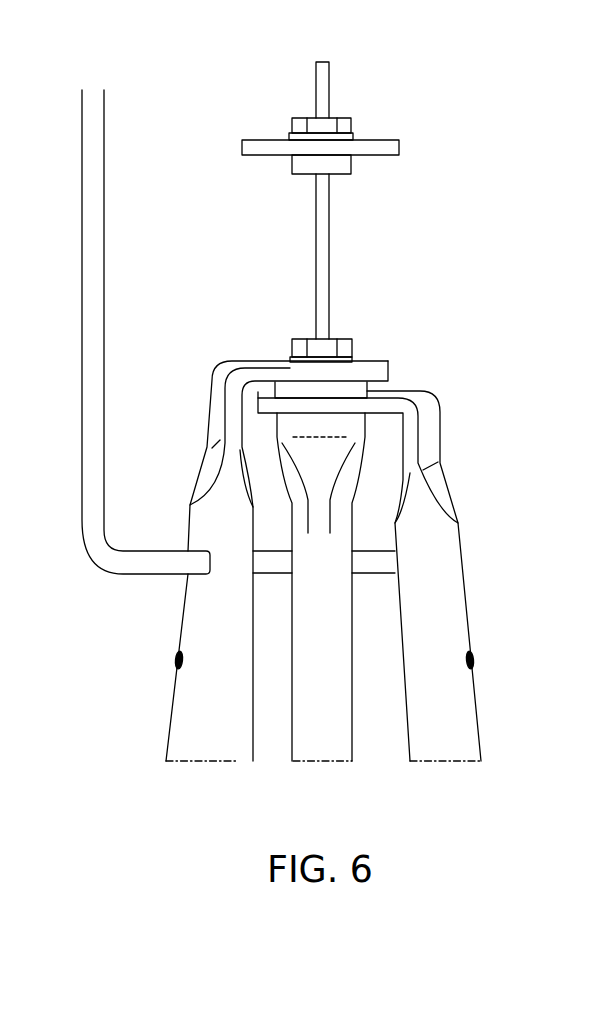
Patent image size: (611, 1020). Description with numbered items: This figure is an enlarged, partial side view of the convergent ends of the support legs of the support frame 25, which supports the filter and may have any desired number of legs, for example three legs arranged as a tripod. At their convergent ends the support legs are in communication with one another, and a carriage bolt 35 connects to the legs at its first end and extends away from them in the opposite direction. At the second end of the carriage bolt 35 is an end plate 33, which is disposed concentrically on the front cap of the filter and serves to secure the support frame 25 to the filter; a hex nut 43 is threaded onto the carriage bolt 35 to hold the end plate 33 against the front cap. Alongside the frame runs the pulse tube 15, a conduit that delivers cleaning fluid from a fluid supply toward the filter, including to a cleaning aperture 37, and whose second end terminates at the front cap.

The pulse tube 15 is at (104, 253).
The support frame 25 is at (352, 625).
The end plate 33 is at (399, 148).
The carriage bolt 35 is at (329, 278).
The cleaning aperture 37 is at (473, 660).
The hex nut 43 is at (351, 123).